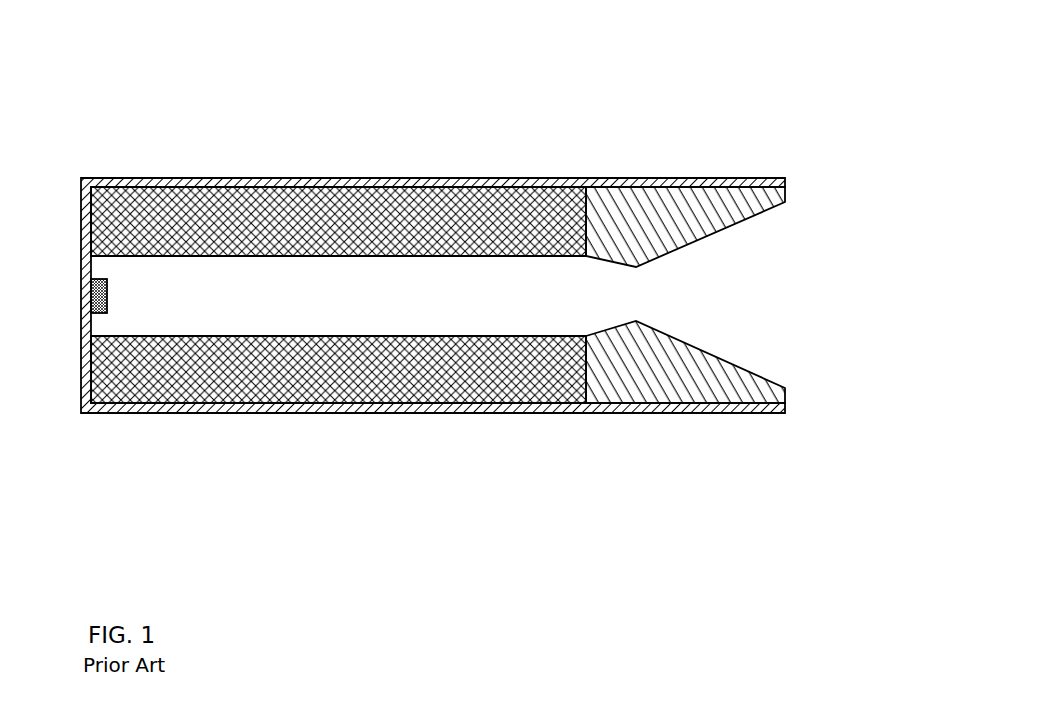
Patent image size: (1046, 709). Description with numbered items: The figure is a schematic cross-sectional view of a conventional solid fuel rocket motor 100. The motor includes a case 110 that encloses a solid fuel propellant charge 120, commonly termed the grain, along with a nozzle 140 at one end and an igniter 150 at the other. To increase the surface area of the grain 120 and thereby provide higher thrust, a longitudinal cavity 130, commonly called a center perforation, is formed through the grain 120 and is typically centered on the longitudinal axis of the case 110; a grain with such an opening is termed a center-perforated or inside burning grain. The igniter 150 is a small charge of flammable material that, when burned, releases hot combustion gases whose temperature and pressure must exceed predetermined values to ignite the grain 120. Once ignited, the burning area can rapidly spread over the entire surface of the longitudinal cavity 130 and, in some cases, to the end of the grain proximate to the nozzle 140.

The rocket motor 100 is at (183, 80).
The case 110 is at (527, 178).
The solid fuel propellant charge 120 is at (325, 217).
The longitudinal cavity 130 is at (384, 305).
The nozzle 140 is at (743, 221).
The igniter 150 is at (91, 297).